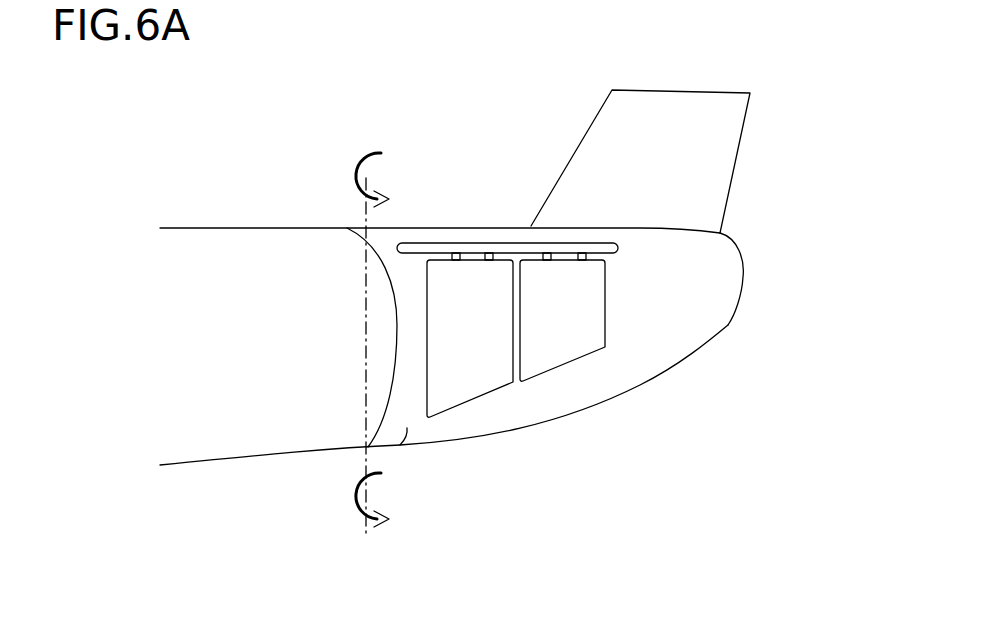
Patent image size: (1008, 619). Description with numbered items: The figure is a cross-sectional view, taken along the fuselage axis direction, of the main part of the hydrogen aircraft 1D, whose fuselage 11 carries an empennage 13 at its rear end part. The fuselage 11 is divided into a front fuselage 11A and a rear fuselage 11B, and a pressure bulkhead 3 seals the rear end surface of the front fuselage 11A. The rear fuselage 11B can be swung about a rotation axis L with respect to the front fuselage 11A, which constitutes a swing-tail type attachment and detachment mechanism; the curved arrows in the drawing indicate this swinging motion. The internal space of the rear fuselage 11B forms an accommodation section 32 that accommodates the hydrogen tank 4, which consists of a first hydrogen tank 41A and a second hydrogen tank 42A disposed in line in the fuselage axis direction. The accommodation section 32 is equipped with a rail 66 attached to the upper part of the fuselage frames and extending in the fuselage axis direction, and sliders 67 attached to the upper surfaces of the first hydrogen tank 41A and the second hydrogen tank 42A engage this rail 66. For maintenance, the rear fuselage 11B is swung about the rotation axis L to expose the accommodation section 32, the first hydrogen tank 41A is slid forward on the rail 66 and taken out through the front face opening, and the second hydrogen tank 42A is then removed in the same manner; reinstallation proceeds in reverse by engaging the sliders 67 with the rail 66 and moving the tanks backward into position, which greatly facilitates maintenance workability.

The hydrogen aircraft 1D is at (798, 98).
The fuselage 11 is at (251, 213).
The front fuselage 11A is at (226, 466).
The rear fuselage 11B is at (663, 372).
The empennage 13 is at (722, 158).
The pressure bulkhead 3 is at (397, 316).
The rotation axis L is at (366, 368).
The accommodation section 32 is at (407, 428).
The hydrogen tank 4 is at (602, 514).
The first hydrogen tank 41A is at (462, 380).
The second hydrogen tank 42A is at (568, 346).
The rail 66 is at (510, 250).
The sliders 67 is at (467, 258).